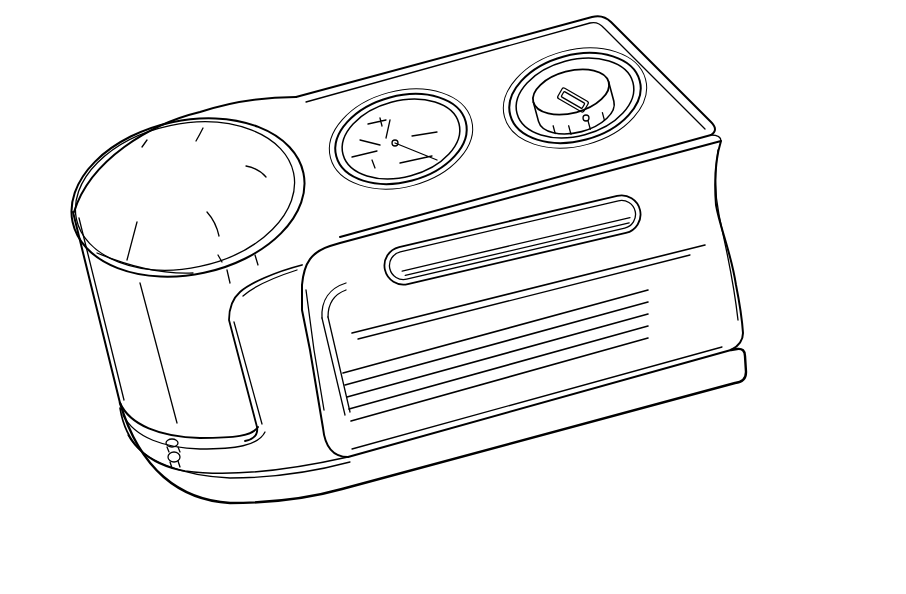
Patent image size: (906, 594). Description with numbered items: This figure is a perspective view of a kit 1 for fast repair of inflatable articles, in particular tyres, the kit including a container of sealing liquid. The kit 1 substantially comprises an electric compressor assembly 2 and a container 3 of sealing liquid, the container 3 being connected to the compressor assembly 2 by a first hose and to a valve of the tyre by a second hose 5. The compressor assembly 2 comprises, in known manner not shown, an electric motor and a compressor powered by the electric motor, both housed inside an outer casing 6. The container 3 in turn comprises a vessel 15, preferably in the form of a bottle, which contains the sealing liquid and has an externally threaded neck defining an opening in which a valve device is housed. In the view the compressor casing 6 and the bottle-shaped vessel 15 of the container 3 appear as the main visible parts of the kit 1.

The kit 1 is at (717, 68).
The electric compressor assembly 2 is at (466, 101).
The container of sealing liquid 3 is at (108, 390).
The second hose 5 is at (357, 456).
The outer casing 6 is at (700, 220).
The vessel 15 is at (148, 392).